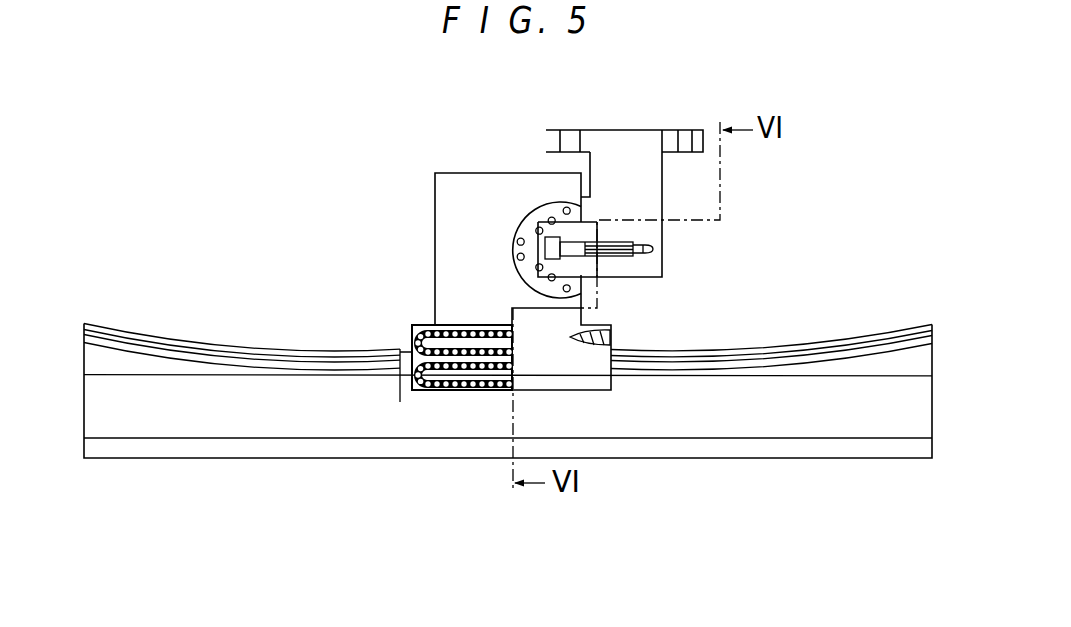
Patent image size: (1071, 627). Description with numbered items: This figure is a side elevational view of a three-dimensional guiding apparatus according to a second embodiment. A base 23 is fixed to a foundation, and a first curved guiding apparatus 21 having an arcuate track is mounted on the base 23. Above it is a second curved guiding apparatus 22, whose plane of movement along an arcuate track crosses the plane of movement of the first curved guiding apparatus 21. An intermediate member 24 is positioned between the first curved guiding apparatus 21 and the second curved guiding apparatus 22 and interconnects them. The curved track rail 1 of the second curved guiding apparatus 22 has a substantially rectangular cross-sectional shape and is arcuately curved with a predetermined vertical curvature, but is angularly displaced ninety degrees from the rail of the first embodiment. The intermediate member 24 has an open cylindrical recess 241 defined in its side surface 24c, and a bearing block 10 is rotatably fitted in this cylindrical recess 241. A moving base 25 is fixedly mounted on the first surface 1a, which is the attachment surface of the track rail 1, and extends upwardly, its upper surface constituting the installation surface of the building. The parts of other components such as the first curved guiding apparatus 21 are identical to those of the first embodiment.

The curved track rail 1 is at (583, 236).
The first surface 1a is at (597, 266).
The bearing block 10 is at (517, 227).
The first curved guiding apparatus 21 is at (618, 335).
The second curved guiding apparatus 22 is at (538, 202).
The base 23 is at (665, 427).
The intermediate member 24 is at (472, 243).
The side surface 24c is at (588, 195).
The cylindrical recess 241 is at (530, 272).
The moving base 25 is at (655, 142).